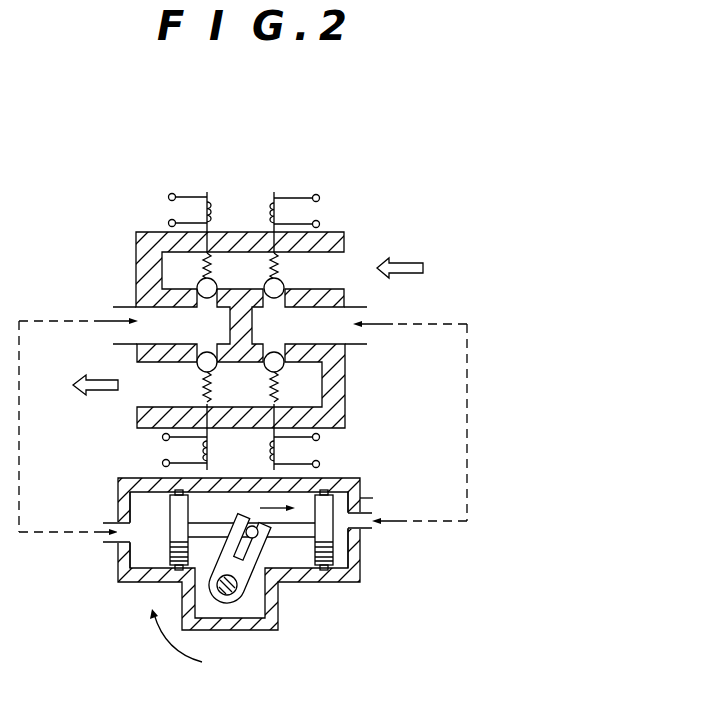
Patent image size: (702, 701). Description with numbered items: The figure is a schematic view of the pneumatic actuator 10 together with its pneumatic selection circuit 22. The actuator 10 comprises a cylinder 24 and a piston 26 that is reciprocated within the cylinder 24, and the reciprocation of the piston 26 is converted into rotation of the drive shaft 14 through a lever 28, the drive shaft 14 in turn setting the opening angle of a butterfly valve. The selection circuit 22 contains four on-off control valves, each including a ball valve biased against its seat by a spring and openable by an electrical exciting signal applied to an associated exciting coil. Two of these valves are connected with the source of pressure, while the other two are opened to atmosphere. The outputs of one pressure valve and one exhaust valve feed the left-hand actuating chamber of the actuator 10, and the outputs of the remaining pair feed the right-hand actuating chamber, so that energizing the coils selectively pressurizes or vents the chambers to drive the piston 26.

The fluid actuator 10 is at (376, 540).
The drive shaft 14 is at (222, 596).
The pneumatic selection circuit 22 is at (283, 181).
The cylinder 24 is at (309, 583).
The piston 26 is at (207, 531).
The lever 28 is at (245, 594).